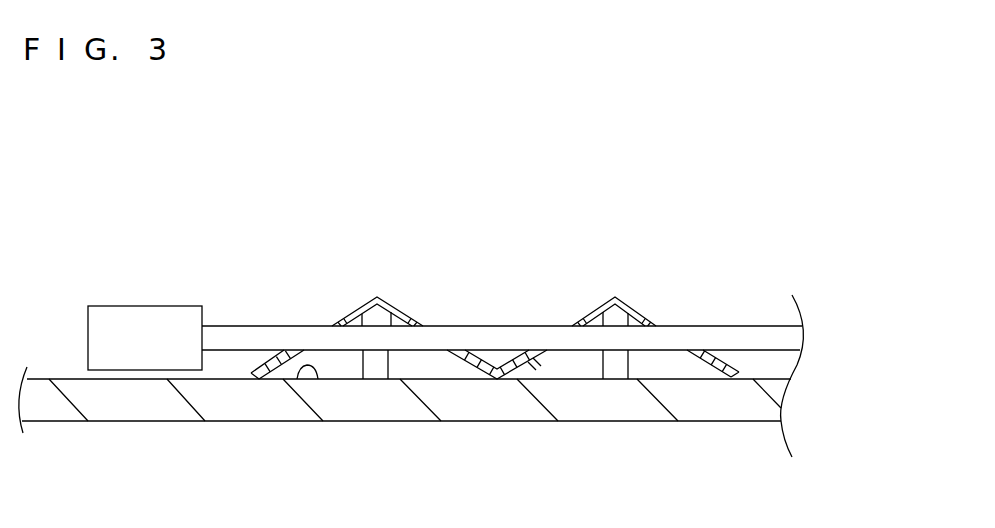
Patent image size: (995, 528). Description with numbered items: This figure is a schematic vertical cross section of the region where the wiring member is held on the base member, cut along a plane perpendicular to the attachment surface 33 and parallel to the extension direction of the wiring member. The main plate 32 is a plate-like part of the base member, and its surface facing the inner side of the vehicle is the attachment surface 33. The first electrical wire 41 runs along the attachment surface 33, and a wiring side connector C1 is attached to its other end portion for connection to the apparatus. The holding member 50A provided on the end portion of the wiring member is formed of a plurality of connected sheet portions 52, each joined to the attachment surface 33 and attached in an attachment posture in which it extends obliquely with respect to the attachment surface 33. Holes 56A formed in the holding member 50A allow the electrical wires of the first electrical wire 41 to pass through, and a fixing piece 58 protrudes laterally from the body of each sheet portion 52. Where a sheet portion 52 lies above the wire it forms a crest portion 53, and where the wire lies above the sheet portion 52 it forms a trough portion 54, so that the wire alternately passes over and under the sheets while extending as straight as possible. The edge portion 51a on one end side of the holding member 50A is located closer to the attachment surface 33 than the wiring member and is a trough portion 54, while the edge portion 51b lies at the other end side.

The main plate 32 is at (133, 410).
The attachment surface 33 is at (313, 379).
The first electrical wire 41 is at (218, 334).
The wiring side connector C1 is at (127, 312).
The holding member 50A is at (532, 360).
The edge portion 51a is at (270, 377).
The edge portion 51b is at (725, 373).
The sheet portion 52 is at (392, 310).
The crest portion 53 is at (378, 298).
The trough portion 54 is at (260, 377).
The hole 56A is at (330, 325).
The fixing piece 58 is at (377, 368).